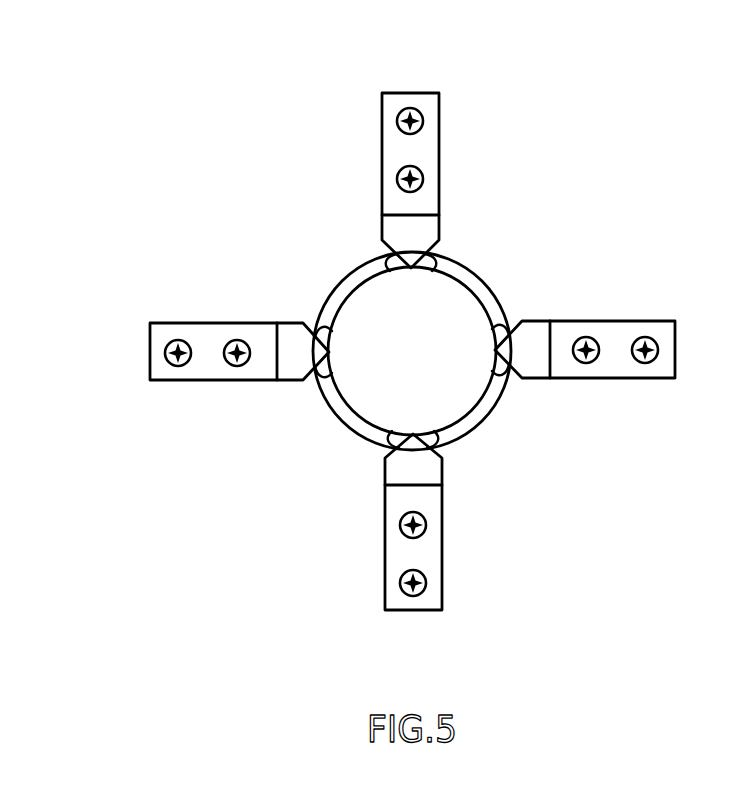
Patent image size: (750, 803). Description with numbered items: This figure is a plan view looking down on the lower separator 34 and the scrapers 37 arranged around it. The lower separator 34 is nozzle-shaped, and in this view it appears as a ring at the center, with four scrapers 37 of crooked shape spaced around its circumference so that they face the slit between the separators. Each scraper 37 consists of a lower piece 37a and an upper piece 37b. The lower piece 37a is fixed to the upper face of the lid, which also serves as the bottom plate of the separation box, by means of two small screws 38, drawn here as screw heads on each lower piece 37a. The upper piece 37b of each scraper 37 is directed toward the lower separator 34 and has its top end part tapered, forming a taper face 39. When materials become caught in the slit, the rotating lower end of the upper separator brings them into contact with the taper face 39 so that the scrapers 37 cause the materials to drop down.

The lower separator 34 is at (355, 420).
The scraper 37 is at (410, 341).
The lower piece 37a is at (418, 103).
The upper piece 37b is at (440, 224).
The small screw 38 is at (425, 121).
The taper face 39 is at (315, 312).